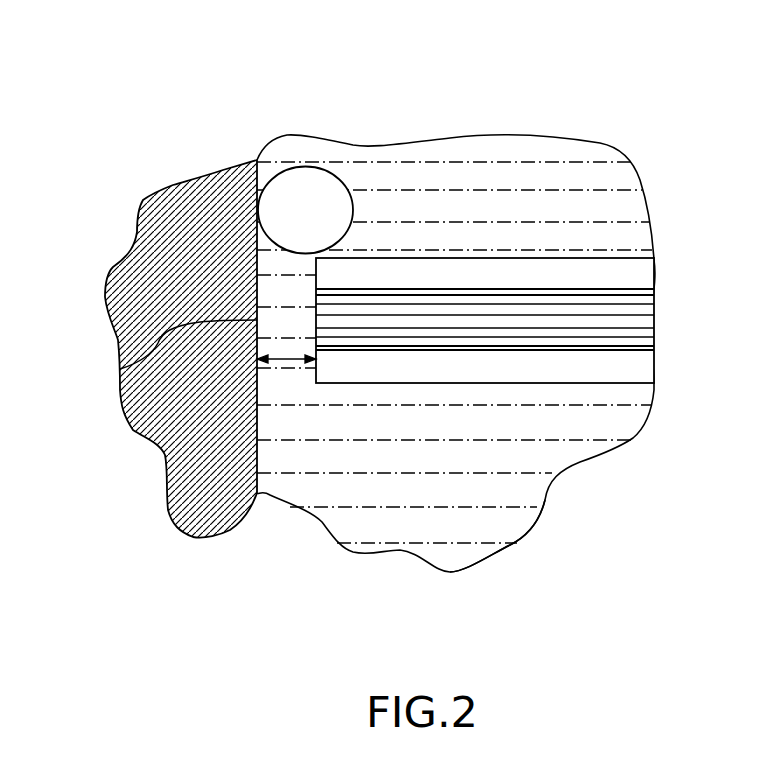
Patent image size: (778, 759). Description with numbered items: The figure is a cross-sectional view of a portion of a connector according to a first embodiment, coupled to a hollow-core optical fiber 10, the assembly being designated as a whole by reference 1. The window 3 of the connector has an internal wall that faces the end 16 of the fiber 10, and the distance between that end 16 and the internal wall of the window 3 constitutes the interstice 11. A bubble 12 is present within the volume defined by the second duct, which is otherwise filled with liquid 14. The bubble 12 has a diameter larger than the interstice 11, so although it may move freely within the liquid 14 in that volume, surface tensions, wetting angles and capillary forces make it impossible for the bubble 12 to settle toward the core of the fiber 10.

The structure 1 is at (605, 78).
The window 3 is at (180, 185).
The fiber 10 is at (615, 383).
The interstice 11 is at (287, 360).
The bubble 12 is at (330, 175).
The liquid 14 is at (518, 485).
The end 16 is at (120, 369).